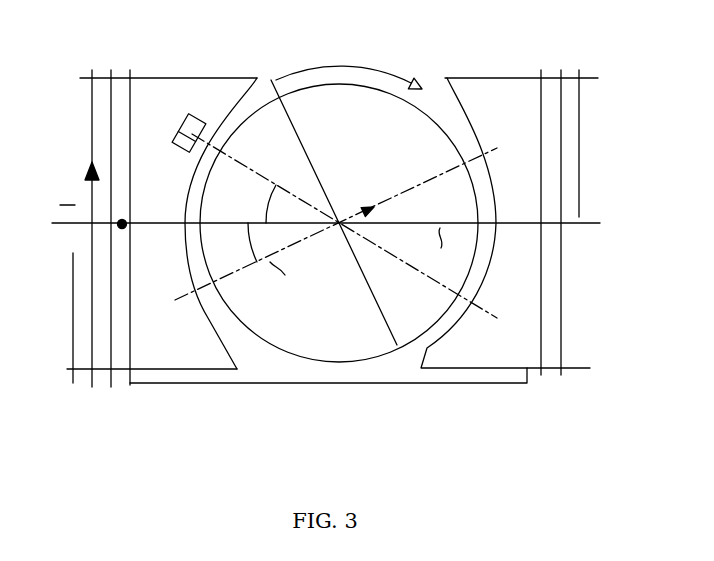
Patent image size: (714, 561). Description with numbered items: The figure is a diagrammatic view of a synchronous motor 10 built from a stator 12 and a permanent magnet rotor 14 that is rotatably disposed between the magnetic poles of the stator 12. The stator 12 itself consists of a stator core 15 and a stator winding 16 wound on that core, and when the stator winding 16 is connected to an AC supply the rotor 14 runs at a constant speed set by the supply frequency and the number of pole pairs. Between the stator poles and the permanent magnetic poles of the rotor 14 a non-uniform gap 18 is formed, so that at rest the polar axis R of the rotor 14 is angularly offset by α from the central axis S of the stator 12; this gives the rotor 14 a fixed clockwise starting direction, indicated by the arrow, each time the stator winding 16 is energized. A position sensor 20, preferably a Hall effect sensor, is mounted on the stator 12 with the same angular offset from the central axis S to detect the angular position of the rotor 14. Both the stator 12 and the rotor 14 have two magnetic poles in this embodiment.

The synchronous motor 10 is at (222, 57).
The stator 12 is at (140, 74).
The permanent magnet rotor 14 is at (271, 95).
The stator core 15 is at (178, 353).
The stator winding 16 is at (92, 120).
The non-uniform gap 18 is at (454, 100).
The position sensor 20 is at (178, 122).